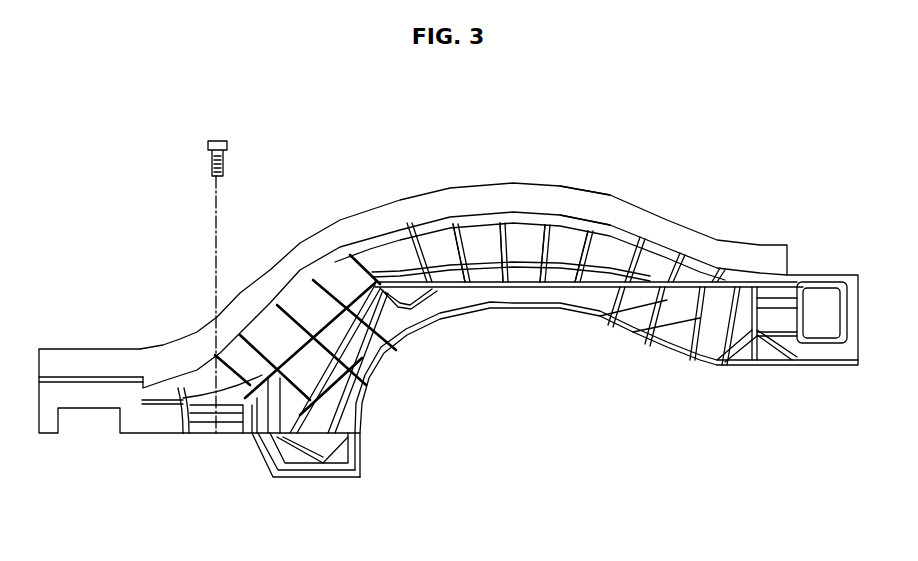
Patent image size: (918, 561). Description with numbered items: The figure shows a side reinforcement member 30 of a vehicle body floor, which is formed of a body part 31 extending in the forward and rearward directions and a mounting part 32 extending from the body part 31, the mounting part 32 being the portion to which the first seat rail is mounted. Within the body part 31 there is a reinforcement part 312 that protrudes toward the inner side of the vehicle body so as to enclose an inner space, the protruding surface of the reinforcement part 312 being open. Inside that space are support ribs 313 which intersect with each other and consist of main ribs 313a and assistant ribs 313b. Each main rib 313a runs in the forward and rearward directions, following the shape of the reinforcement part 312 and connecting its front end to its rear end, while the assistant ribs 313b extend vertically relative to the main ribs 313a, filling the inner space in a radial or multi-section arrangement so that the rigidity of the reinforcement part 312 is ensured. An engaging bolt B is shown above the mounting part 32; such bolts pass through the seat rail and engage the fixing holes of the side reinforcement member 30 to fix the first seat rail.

The side reinforcement member 30 is at (492, 170).
The body part 31 is at (92, 422).
The mounting part 32 is at (233, 413).
The reinforcement part 312 is at (577, 232).
The support ribs 313 is at (617, 397).
The main ribs 313a is at (522, 258).
The assistant ribs 313b is at (650, 280).
The engaging bolt B is at (222, 157).